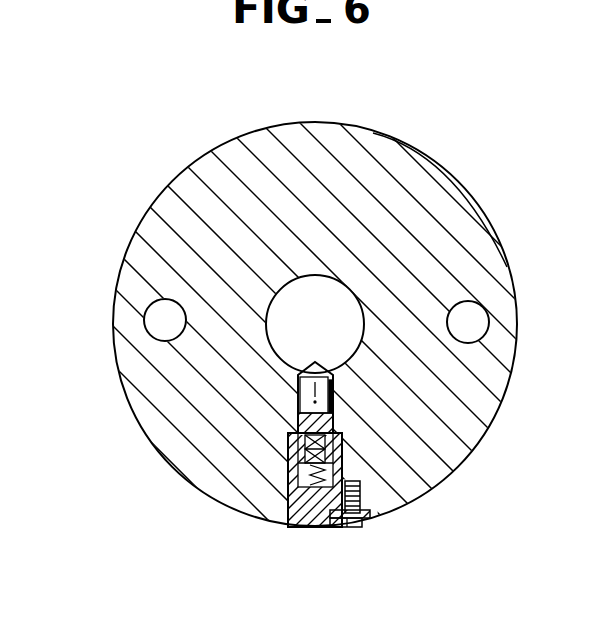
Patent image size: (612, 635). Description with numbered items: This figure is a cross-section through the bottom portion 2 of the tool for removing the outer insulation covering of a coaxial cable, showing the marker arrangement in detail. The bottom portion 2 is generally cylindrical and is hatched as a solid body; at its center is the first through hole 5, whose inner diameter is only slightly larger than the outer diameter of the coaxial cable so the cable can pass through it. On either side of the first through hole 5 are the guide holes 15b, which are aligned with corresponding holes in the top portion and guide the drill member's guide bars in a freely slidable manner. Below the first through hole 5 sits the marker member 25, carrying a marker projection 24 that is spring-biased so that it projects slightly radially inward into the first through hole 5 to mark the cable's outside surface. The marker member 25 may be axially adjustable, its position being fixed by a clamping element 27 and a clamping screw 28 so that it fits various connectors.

The bottom portion 2 is at (328, 137).
The first through hole 5 is at (308, 288).
The guide holes 15b is at (162, 317).
The marker projection 24 is at (298, 386).
The marker member 25 is at (312, 536).
The clamping element 27 is at (363, 516).
The clamping screw 28 is at (352, 530).